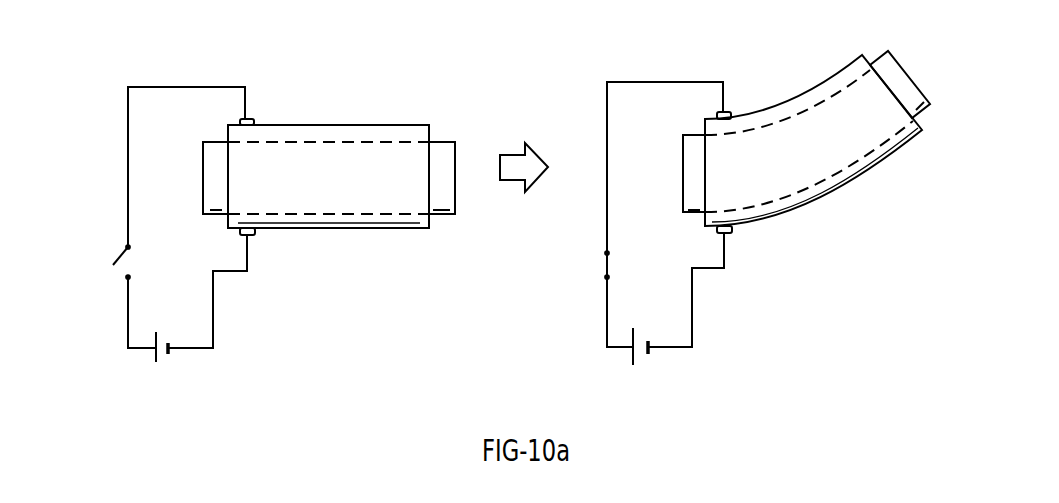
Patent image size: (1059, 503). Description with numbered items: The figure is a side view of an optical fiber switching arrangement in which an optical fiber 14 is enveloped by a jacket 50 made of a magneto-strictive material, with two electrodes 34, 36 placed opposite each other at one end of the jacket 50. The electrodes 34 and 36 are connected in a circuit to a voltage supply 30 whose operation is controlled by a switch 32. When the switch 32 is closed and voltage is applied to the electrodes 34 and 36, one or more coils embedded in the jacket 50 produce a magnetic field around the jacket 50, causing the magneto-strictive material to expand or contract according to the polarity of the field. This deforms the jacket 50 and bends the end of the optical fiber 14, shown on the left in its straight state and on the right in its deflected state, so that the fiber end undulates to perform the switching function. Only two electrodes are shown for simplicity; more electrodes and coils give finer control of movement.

The optical fiber 14 is at (442, 150).
The voltage supply 30 is at (163, 357).
The switch 32 is at (118, 271).
The electrode 34 is at (250, 235).
The electrode 36 is at (254, 118).
The jacket 50 is at (368, 125).